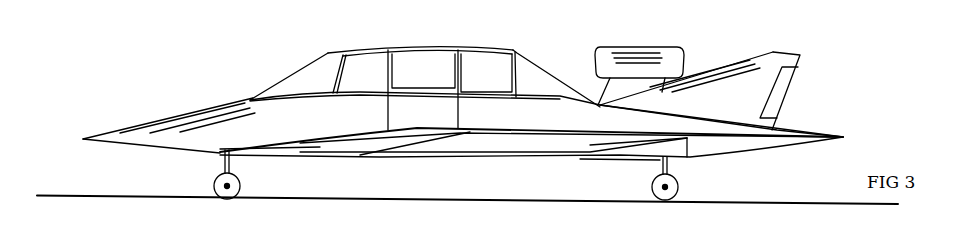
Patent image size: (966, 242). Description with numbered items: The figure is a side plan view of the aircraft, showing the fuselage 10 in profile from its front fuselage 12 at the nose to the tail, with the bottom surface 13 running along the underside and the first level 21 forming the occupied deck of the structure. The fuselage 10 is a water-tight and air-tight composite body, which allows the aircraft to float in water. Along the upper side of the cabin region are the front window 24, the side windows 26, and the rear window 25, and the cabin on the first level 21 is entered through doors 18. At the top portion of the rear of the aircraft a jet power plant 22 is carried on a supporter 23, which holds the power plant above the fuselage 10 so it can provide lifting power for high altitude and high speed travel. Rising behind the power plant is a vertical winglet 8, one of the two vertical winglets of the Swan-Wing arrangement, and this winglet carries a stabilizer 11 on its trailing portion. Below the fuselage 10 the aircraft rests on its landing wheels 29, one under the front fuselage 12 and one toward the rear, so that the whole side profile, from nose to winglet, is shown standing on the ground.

The vertical winglet 8 is at (768, 78).
The fuselage 10 is at (213, 108).
The stabilizer 11 is at (778, 100).
The front fuselage 12 is at (103, 130).
The bottom surface 13 is at (160, 150).
The door 18 is at (422, 67).
The first level 21 is at (548, 132).
The jet power plant 22 is at (635, 50).
The supporter 23 is at (650, 85).
The front window 24 is at (313, 78).
The rear window 25 is at (548, 88).
The side window 26 is at (487, 72).
The landing gear wheel 29 is at (237, 190).